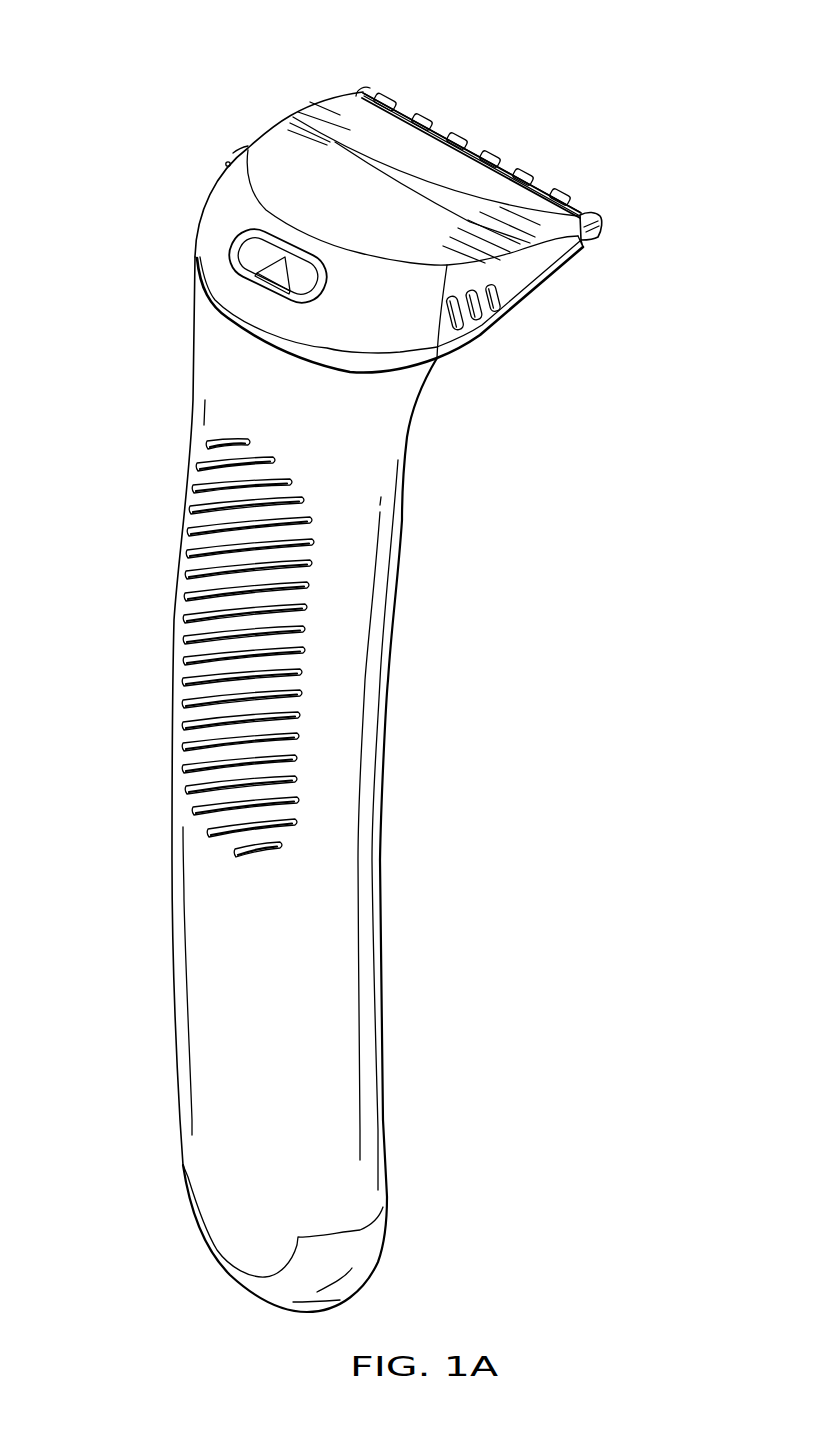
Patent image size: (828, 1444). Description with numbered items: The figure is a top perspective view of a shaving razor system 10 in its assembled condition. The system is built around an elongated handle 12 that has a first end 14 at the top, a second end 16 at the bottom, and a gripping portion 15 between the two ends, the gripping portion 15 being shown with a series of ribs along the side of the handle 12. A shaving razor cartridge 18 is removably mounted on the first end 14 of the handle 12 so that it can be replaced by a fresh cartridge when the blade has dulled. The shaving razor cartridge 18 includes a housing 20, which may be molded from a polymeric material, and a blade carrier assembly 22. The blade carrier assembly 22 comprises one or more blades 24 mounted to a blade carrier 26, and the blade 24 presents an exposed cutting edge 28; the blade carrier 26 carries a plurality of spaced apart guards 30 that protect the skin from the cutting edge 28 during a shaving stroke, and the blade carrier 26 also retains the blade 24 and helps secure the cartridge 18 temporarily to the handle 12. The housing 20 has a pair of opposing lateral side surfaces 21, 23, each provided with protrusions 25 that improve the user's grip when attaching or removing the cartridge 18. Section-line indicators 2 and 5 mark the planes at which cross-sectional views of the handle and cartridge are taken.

The section line 2- 2 is at (323, 85).
The section line 5- 5 is at (205, 122).
The shaving razor system 10 is at (120, 265).
The handle 12 is at (385, 813).
The first end 14 is at (500, 327).
The gripping portion 15 is at (180, 597).
The second end 16 is at (383, 1245).
The shaving razor cartridge 18 is at (205, 228).
The housing 20 is at (360, 98).
The lateral side surface 21 is at (584, 243).
The blade carrier assembly 22 is at (463, 110).
The lateral side surface 23 is at (240, 150).
The blade 24 is at (505, 172).
The protrusions 25 is at (227, 165).
The blade carrier 26 is at (600, 228).
The cutting edge 28 is at (407, 108).
The guards 30 is at (570, 195).